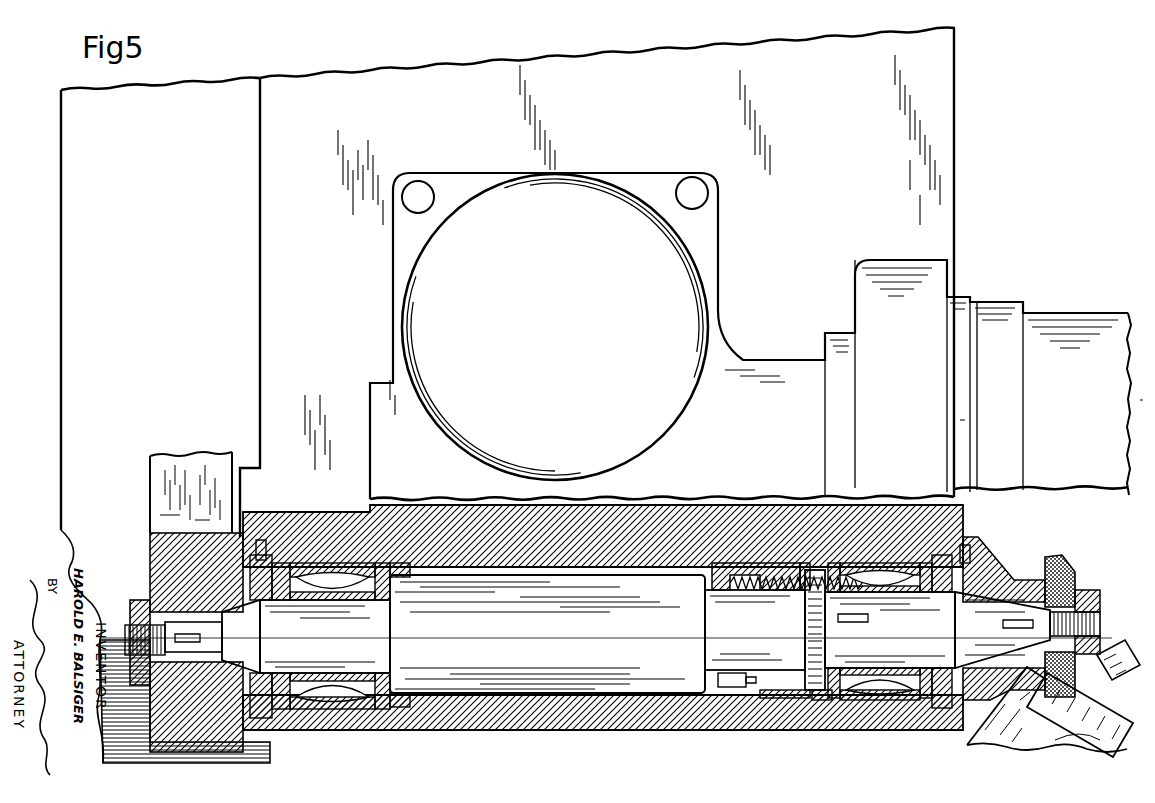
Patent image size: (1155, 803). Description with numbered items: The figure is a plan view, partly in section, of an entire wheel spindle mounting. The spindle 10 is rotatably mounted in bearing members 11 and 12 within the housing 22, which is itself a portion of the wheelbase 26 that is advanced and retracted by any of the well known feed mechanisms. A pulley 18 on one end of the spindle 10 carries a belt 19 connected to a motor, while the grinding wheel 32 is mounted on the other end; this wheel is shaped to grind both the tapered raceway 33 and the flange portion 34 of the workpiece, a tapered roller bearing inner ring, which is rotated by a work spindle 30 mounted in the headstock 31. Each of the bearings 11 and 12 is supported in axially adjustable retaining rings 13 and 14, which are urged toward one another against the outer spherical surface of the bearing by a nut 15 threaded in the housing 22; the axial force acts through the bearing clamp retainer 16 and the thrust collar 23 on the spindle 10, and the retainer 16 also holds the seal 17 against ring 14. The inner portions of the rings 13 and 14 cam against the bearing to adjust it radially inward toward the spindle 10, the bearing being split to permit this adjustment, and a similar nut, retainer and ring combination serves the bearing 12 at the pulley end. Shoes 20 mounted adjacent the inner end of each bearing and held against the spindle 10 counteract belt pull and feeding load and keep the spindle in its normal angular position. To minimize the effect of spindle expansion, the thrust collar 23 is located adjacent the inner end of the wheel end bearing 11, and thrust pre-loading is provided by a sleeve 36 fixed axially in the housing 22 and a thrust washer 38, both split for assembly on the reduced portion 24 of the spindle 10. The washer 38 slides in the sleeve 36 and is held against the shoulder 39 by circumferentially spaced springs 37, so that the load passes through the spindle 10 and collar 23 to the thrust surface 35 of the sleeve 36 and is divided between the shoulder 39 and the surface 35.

The spindle 10 is at (580, 680).
The bearing member 11 is at (873, 712).
The bearing member 12 is at (338, 706).
The retaining ring 13 is at (842, 712).
The retaining ring 14 is at (912, 715).
The nut 15 is at (985, 557).
The bearing clamp retainer 16 is at (975, 548).
The seal 17 is at (932, 722).
The pulley 18 is at (150, 553).
The belt 19 is at (158, 482).
The shoe 20 is at (820, 728).
The housing 22 is at (660, 712).
The thrust collar 23 is at (770, 716).
The reduced portion 24 is at (768, 628).
The wheelbase 26 is at (945, 119).
The work spindle 30 is at (1116, 660).
The headstock 31 is at (975, 742).
The grinding wheel 32 is at (1066, 568).
The tapered raceway 33 is at (1058, 692).
The flange portion 34 is at (1050, 674).
The thrust surface 35 is at (812, 512).
The sleeve 36 is at (728, 712).
The spring 37 is at (760, 512).
The thrust washer 38 is at (712, 512).
The shoulder 39 is at (697, 715).